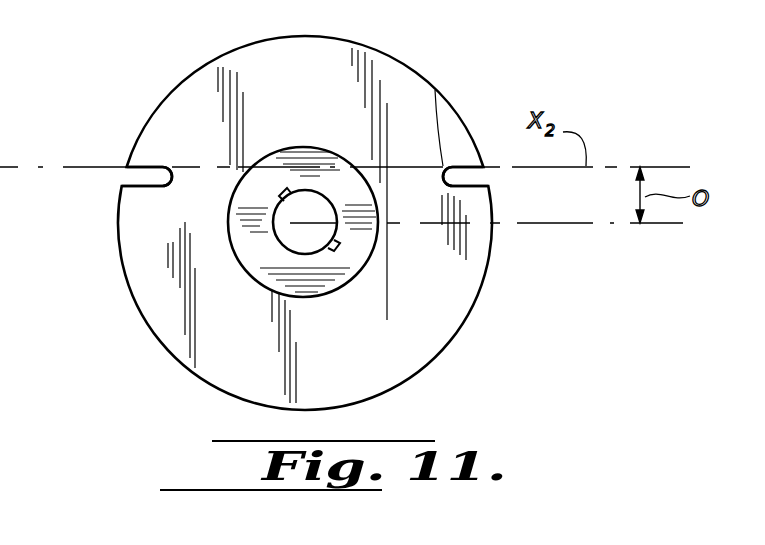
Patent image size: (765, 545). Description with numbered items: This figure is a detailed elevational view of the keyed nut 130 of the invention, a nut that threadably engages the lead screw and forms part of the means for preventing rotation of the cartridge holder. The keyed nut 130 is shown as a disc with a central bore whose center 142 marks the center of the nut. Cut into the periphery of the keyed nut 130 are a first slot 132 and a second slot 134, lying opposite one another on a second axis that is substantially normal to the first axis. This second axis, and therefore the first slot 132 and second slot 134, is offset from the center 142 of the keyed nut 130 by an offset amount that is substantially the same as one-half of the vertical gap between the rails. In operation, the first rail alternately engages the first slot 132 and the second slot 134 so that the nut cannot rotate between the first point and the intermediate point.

The keyed nut 130 is at (470, 291).
The first slot 132 is at (128, 178).
The second slot 134 is at (470, 177).
The center 142 is at (292, 240).